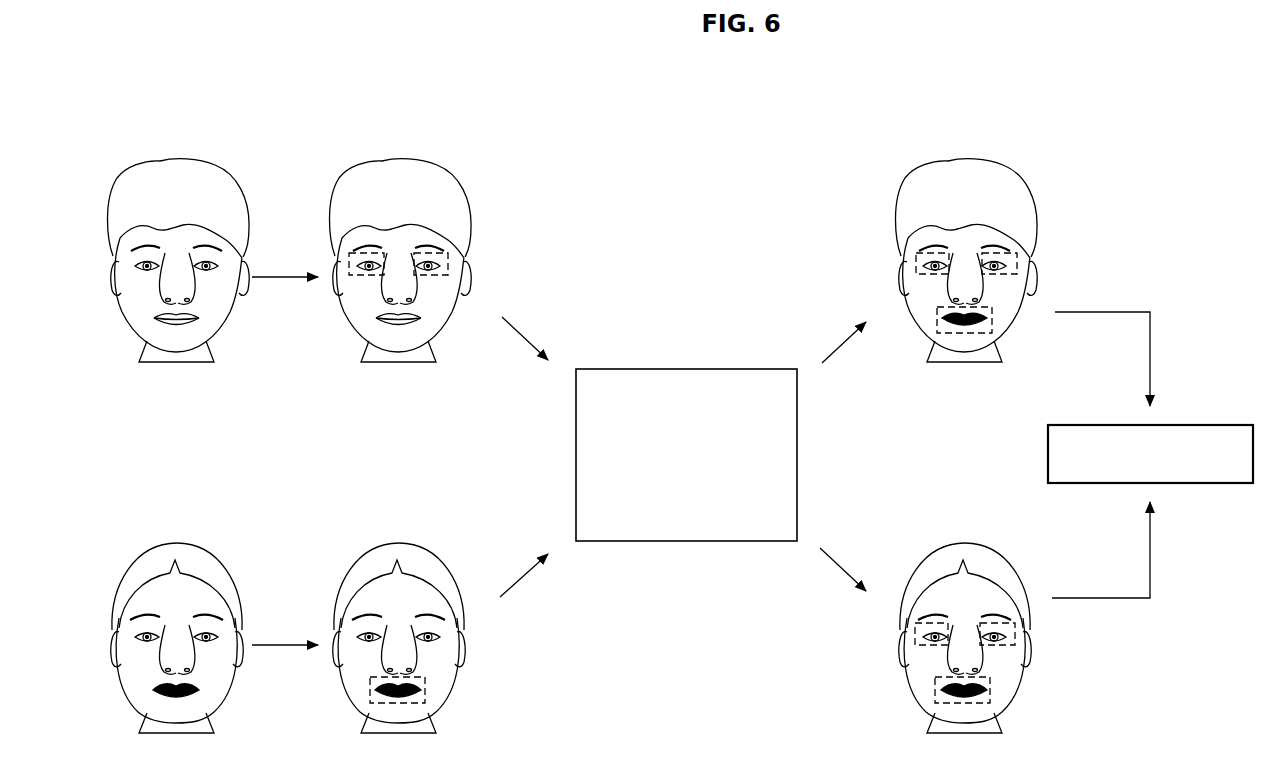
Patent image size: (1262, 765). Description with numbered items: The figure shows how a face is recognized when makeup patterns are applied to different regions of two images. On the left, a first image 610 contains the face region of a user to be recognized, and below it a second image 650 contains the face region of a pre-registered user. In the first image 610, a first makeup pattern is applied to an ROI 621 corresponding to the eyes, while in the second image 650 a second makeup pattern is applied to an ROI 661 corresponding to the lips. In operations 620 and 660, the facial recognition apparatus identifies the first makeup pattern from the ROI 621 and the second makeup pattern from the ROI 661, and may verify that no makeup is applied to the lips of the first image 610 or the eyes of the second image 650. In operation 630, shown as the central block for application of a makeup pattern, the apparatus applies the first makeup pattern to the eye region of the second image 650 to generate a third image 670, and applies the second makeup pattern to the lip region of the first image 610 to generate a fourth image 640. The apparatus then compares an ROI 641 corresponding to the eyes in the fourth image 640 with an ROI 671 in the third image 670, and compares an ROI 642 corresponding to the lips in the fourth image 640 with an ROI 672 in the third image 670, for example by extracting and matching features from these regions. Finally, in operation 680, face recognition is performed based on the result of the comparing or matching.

The first image 610 is at (187, 163).
The operation of identifying the first makeup pattern 620 is at (407, 163).
The ROI corresponding to eyes 621 is at (384, 275).
The operation of applying makeup patterns 630 is at (688, 368).
The fourth image 640 is at (973, 163).
The ROI corresponding to eyes in fourth image 641 is at (950, 254).
The ROI corresponding to lips in fourth image 642 is at (992, 333).
The second image 650 is at (180, 543).
The operation of identifying the second makeup pattern 660 is at (402, 543).
The ROI corresponding to lips 661 is at (422, 679).
The third image 670 is at (968, 543).
The ROI corresponding to eyes in third image 671 is at (948, 645).
The ROI corresponding to lips in third image 672 is at (990, 703).
The face recognition operation 680 is at (1181, 425).